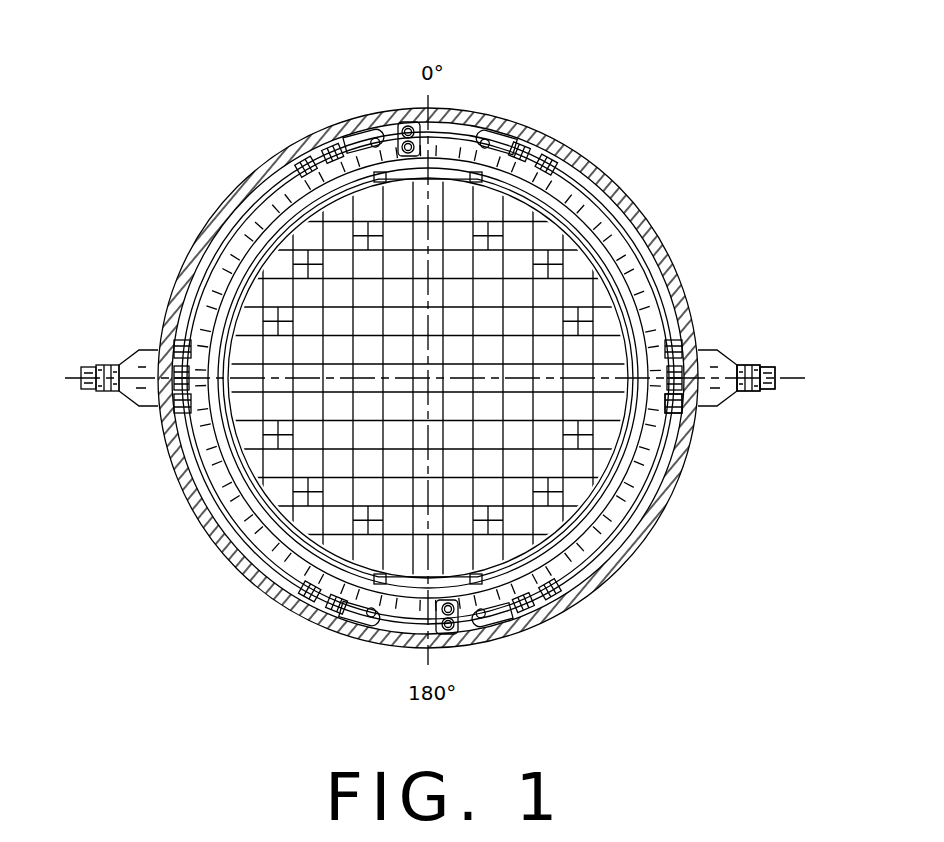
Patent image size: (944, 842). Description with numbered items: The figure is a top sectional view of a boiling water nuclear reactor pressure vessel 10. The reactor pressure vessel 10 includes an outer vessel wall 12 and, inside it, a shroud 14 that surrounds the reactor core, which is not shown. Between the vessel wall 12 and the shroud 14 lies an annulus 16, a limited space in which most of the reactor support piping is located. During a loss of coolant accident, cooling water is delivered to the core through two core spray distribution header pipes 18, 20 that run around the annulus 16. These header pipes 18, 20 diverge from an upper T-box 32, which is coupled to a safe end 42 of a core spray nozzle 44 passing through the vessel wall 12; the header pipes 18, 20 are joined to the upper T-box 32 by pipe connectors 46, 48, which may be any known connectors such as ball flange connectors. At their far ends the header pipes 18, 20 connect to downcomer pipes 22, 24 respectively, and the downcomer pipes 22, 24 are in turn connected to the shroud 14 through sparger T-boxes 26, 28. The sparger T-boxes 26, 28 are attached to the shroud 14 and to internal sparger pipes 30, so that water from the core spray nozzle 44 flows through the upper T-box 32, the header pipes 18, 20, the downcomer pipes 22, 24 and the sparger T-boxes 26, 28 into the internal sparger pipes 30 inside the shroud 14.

The reactor pressure vessel 10 is at (712, 119).
The vessel wall 12 is at (650, 210).
The shroud 14 is at (445, 157).
The annulus 16 is at (463, 137).
The core spray distribution header pipe 18 is at (672, 268).
The core spray distribution header pipe 20 is at (638, 523).
The downcomer pipe 22 is at (502, 153).
The downcomer pipe 24 is at (493, 617).
The sparger T-box 26 is at (483, 135).
The sparger T-box 28 is at (468, 625).
The internal sparger pipe 30 is at (542, 190).
The upper T-box 32 is at (717, 355).
The safe end 42 is at (773, 360).
The core spray nozzle 44 is at (725, 362).
The pipe connector 46 is at (702, 347).
The pipe connector 48 is at (684, 455).